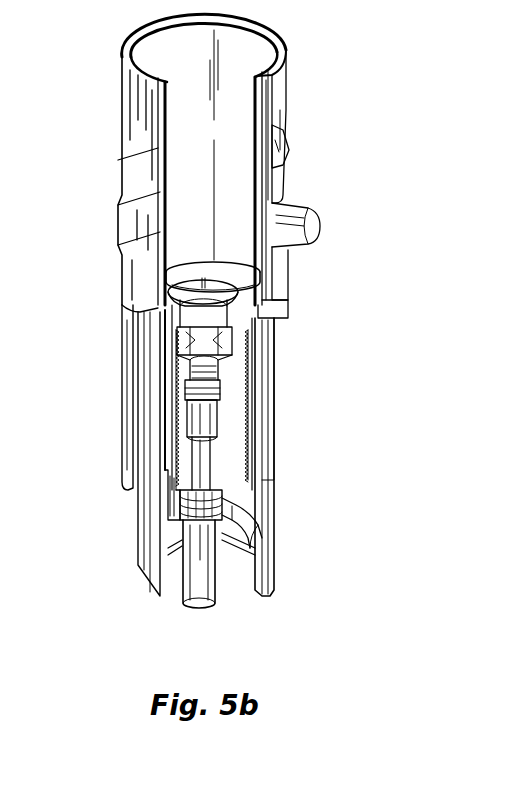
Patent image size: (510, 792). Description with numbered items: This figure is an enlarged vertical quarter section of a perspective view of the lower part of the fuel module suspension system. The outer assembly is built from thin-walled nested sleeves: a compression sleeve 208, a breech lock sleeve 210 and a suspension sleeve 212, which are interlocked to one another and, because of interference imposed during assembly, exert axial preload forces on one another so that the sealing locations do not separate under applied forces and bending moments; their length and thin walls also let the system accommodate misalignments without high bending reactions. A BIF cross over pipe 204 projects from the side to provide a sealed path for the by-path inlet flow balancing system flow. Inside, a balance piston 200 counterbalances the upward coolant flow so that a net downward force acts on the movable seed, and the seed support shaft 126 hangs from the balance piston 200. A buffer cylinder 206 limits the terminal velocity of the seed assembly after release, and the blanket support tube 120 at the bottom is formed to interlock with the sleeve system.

The compression sleeve 208 is at (255, 91).
The breech lock sleeve 210 is at (260, 110).
The suspension sleeve 212 is at (284, 132).
The BIF cross over pipe 204 is at (320, 217).
The balance piston 200 is at (176, 399).
The buffer cylinder 206 is at (174, 474).
The blanket support tube 120 is at (262, 512).
The seed support shaft 126 is at (190, 596).